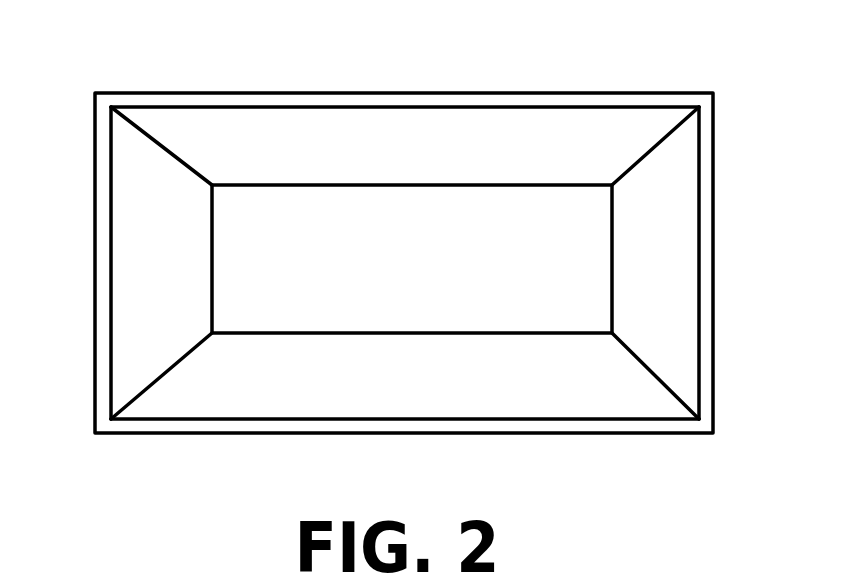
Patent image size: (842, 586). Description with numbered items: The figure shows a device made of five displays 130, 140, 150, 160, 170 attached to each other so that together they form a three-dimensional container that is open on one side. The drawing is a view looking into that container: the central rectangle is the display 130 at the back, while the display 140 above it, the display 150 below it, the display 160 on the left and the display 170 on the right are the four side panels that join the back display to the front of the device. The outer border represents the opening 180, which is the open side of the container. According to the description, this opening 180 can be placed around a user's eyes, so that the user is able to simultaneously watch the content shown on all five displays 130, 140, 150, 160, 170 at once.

The display 130 is at (415, 282).
The display 140 is at (393, 145).
The display 150 is at (330, 402).
The display 160 is at (127, 262).
The display 170 is at (687, 260).
The opening 180 is at (565, 105).